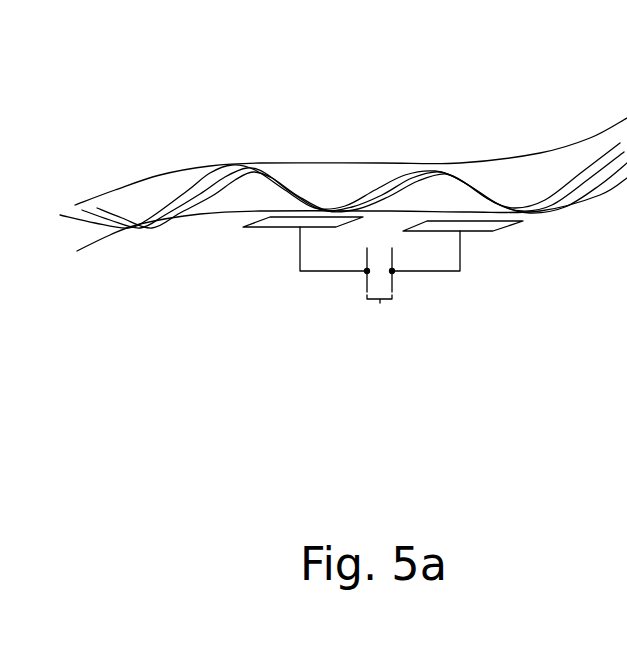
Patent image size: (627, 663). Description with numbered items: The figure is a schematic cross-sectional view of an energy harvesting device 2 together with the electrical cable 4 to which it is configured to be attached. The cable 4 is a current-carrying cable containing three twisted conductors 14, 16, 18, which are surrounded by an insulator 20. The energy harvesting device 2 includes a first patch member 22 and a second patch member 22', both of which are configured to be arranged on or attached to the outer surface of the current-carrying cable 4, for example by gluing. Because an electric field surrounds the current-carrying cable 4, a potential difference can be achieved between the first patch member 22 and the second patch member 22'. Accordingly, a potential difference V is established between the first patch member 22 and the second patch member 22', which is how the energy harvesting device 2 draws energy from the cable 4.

The energy harvesting device 2 is at (371, 348).
The electrical cable 4 is at (337, 117).
The conductor 14 is at (460, 180).
The conductor 16 is at (487, 182).
The conductor 18 is at (564, 172).
The insulator 20 is at (147, 190).
The first patch member 22 is at (294, 268).
The second patch member 22' is at (457, 278).